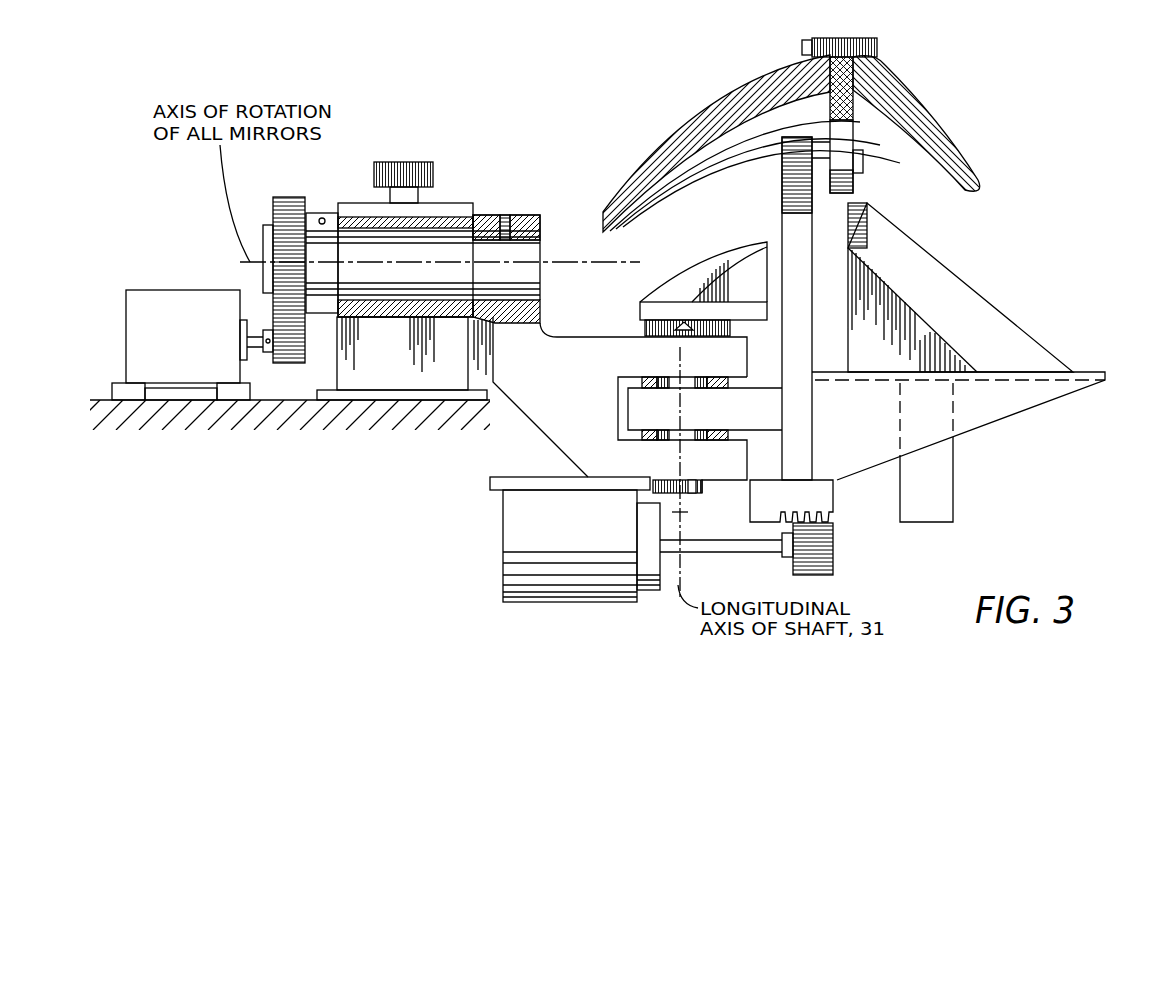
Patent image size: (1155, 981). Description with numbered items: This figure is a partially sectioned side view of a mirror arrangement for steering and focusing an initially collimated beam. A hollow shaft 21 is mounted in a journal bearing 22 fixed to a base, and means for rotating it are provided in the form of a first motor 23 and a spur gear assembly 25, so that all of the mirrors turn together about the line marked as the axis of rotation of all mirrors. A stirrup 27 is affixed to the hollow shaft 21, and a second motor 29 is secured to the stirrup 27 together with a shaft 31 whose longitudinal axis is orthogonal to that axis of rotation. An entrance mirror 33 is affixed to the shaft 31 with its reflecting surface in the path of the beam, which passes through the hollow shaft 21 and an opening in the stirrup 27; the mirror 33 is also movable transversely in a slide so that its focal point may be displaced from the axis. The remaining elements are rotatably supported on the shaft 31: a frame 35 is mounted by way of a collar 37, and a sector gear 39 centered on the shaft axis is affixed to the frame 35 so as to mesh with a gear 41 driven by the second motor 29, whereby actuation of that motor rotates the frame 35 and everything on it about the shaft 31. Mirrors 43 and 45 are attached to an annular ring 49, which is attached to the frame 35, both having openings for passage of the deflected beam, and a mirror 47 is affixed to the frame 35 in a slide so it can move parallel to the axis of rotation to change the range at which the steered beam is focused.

The hollow shaft 21 is at (543, 235).
The journal bearing 22 is at (455, 203).
The first motor 23 is at (172, 290).
The spur gear assembly 25 is at (265, 314).
The stirrup 27 is at (572, 336).
The second motor 29 is at (565, 603).
The shaft 31 is at (694, 493).
The entrance mirror 33 is at (718, 252).
The frame 35 is at (782, 225).
The collar 37 is at (768, 432).
The sector gear 39 is at (833, 483).
The gear 41 is at (833, 553).
The mirror 43 is at (720, 105).
The mirror 45 is at (900, 95).
The mirror 47 is at (953, 287).
The annular ring 49 is at (855, 118).